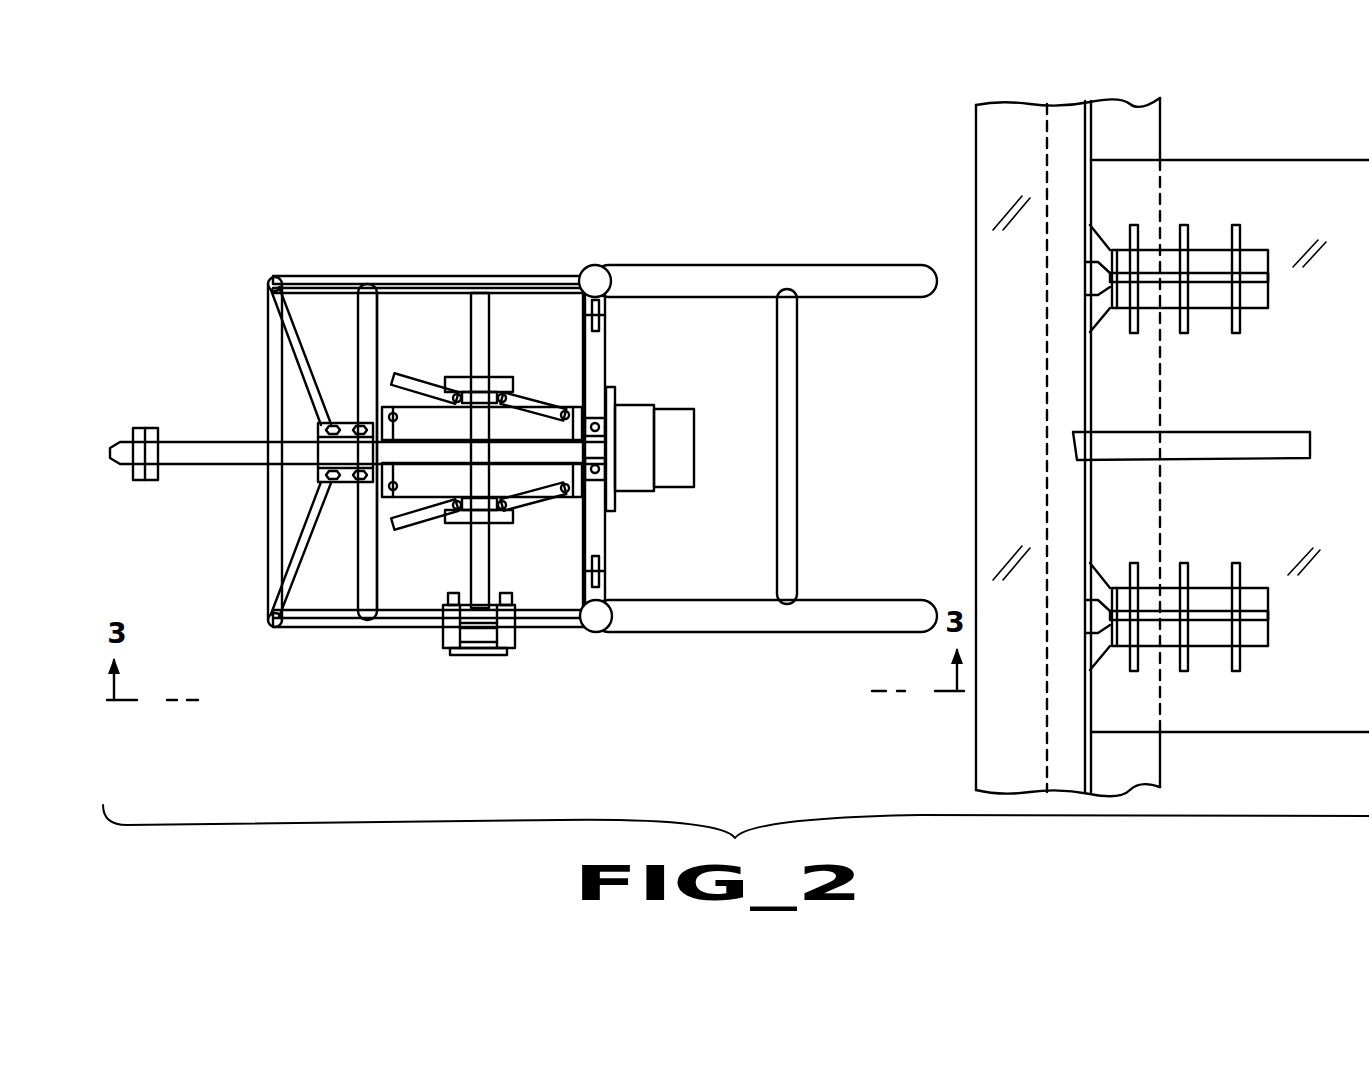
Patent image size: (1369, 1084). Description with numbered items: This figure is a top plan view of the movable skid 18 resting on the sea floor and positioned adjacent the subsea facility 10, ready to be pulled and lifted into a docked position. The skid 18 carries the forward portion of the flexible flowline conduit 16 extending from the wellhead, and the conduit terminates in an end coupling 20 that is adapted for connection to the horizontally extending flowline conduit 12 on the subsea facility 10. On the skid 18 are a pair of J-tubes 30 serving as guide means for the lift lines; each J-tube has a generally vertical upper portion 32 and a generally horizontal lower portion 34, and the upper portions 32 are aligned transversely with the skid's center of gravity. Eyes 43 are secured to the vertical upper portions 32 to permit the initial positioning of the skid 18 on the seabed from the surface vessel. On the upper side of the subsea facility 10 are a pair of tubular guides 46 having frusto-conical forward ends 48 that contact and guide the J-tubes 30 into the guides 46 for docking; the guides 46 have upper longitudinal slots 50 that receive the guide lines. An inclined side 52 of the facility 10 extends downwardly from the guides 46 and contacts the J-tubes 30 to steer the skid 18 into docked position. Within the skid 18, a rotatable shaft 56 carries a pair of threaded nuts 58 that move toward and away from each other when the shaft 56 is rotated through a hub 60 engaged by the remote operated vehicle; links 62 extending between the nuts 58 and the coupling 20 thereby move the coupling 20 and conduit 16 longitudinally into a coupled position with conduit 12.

The subsea facility 10 is at (963, 120).
The flowline conduit 12 is at (1207, 420).
The flowline conduit 16 is at (215, 440).
The skid 18 is at (414, 256).
The end coupling 20 is at (670, 410).
The J-tubes 30 is at (737, 268).
The upper portion 32 is at (593, 266).
The lower portion 34 is at (872, 287).
The eyes 43 is at (606, 320).
The tubular guides 46 is at (1209, 236).
The frusto-conical forward ends 48 is at (1094, 314).
The upper longitudinal slots 50 is at (1258, 281).
The inclined side 52 is at (992, 157).
The rotatable shaft 56 is at (490, 553).
The nuts 58 is at (500, 377).
The hub 60 is at (500, 653).
The links 62 is at (422, 400).